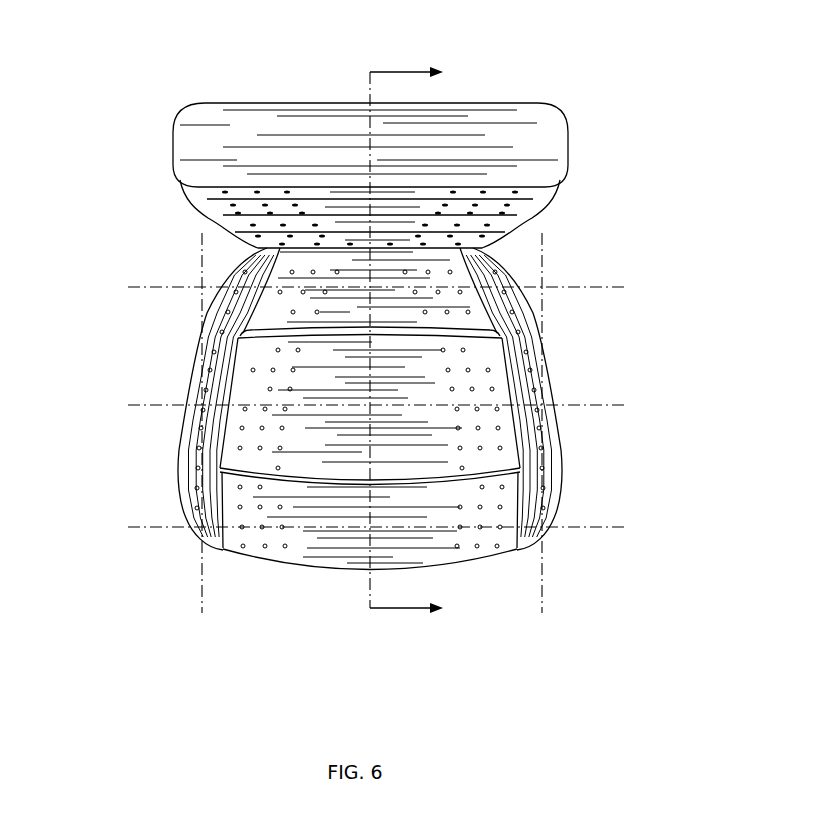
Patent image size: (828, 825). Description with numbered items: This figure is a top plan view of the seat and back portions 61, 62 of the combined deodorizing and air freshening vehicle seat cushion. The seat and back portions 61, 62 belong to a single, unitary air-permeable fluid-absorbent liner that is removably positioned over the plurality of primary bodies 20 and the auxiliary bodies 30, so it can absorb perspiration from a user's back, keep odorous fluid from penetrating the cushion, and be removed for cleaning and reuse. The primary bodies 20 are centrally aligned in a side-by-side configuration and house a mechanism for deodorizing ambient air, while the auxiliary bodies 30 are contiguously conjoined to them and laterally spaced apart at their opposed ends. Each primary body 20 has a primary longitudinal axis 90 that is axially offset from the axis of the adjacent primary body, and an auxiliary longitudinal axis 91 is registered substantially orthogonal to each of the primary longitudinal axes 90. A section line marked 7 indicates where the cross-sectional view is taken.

The section line 7- 7 is at (428, 340).
The primary bodies 20 is at (273, 325).
The auxiliary bodies 30 is at (197, 380).
The seat portion 61 is at (292, 582).
The back portion 62 is at (592, 165).
The primary longitudinal axis 90 is at (606, 285).
The auxiliary longitudinal axis 91 is at (542, 557).